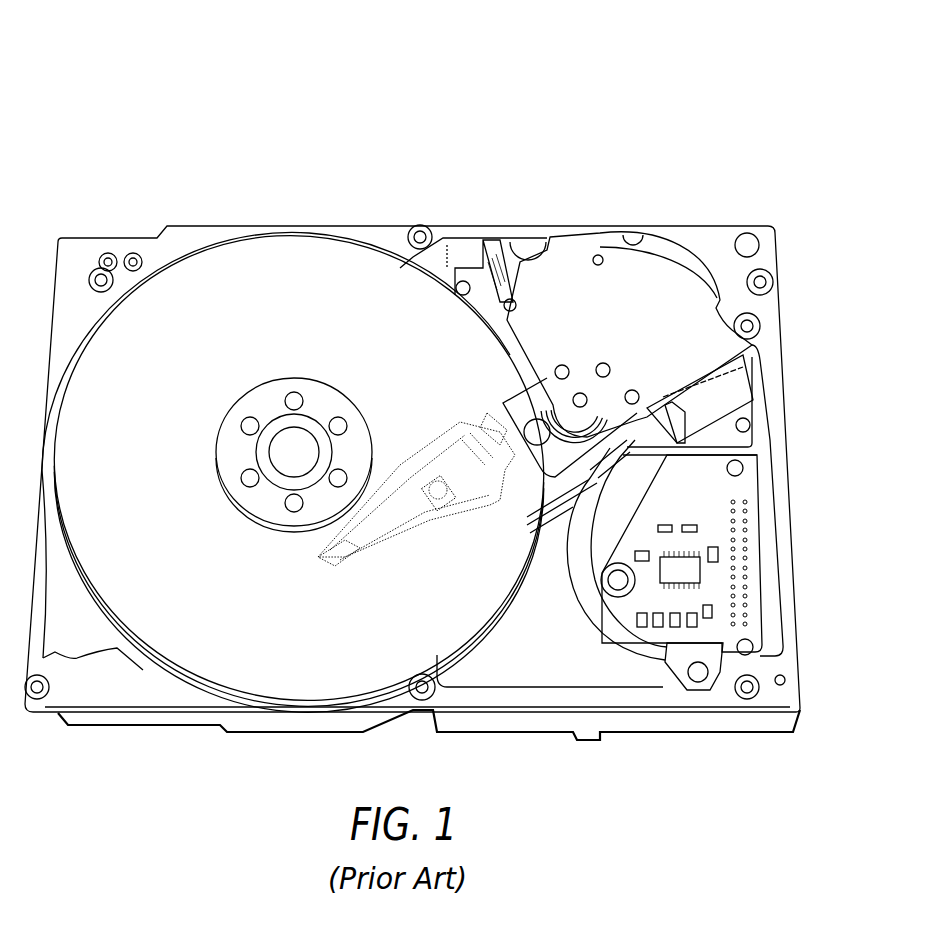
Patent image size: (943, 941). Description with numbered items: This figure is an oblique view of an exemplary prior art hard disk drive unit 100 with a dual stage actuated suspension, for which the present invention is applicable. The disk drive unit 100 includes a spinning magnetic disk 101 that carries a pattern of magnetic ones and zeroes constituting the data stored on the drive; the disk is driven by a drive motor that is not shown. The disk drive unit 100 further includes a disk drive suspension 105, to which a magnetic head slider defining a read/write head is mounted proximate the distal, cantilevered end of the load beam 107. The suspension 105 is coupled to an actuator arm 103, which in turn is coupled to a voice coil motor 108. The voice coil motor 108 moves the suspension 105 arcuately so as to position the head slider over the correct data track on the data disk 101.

The disk drive unit 100 is at (303, 193).
The magnetic disk 101 is at (245, 285).
The actuator arm 103 is at (552, 465).
The disk drive suspension 105 is at (358, 567).
The load beam 107 is at (410, 483).
The voice coil motor 108 is at (617, 322).